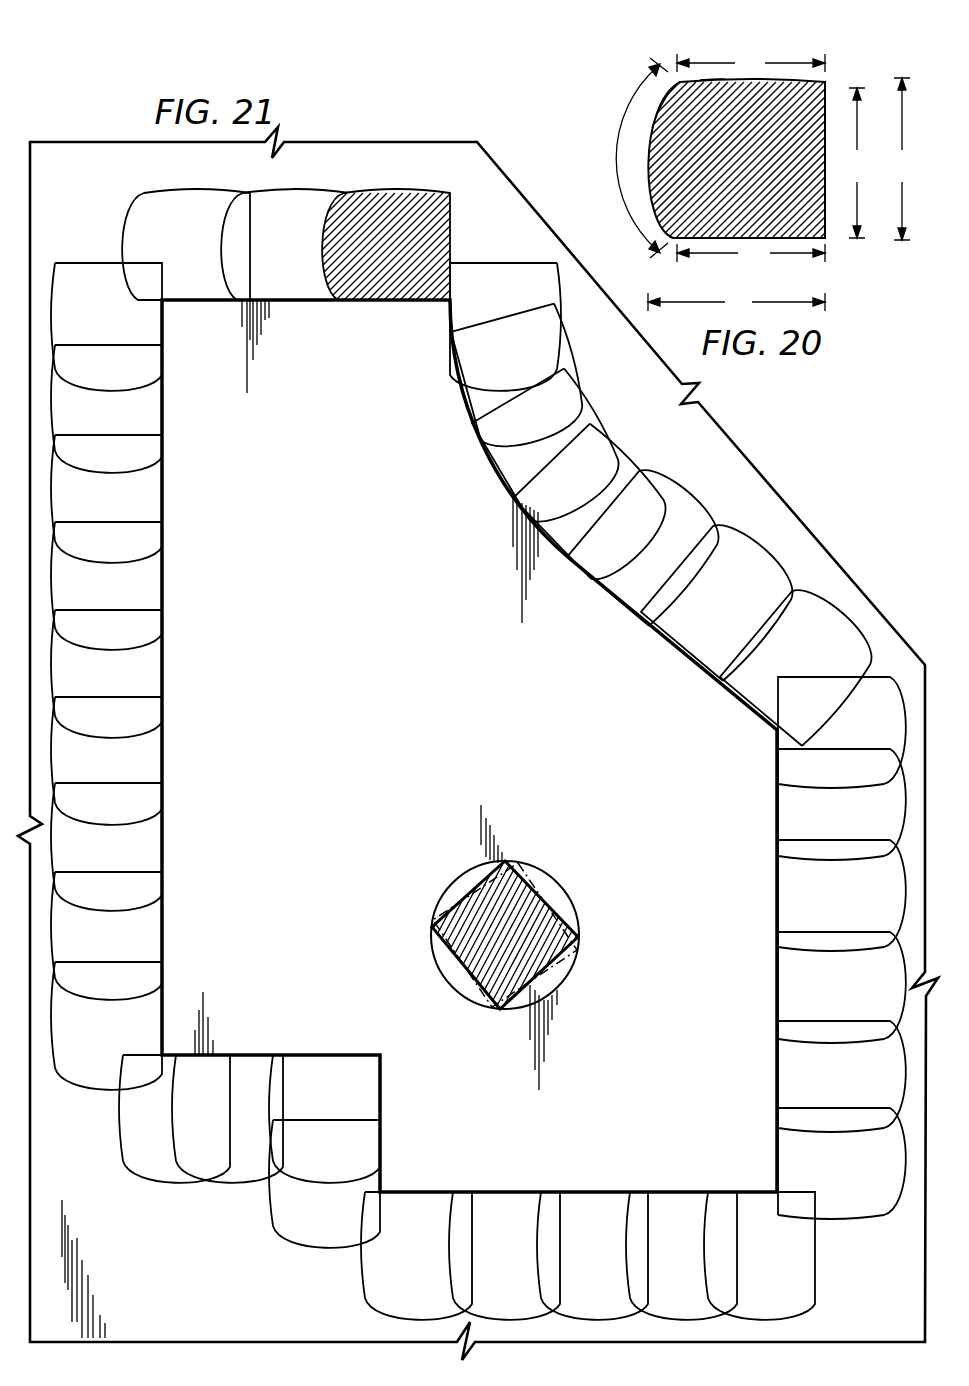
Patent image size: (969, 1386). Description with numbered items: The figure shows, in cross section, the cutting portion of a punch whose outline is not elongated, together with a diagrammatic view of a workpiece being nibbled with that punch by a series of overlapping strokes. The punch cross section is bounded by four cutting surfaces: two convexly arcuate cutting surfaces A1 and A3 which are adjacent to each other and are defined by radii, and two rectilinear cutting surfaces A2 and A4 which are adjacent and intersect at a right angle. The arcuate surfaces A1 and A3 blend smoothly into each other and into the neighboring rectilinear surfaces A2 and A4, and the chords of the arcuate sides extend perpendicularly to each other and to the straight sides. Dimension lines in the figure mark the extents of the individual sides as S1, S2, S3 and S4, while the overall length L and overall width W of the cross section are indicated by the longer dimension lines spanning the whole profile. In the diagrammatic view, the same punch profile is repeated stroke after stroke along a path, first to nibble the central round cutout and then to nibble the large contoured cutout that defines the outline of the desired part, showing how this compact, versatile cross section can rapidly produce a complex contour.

The convexly arcuate cutting surface A1 is at (711, 80).
The rectilinear cutting surface A2 is at (785, 238).
The convexly arcuate cutting surface A3 is at (652, 128).
The rectilinear cutting surface A4 is at (827, 135).
The first side S1 is at (751, 62).
The second side S2 is at (751, 252).
The third (curved) side S3 is at (642, 158).
The fourth side S4 is at (859, 163).
The tile length L is at (736, 302).
The tile width W is at (902, 159).